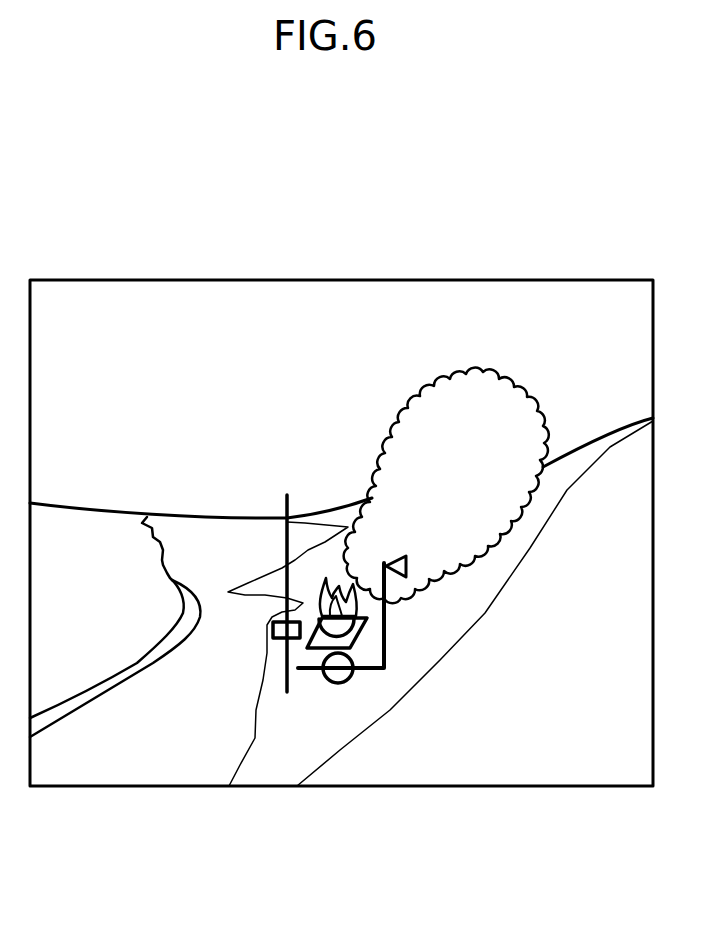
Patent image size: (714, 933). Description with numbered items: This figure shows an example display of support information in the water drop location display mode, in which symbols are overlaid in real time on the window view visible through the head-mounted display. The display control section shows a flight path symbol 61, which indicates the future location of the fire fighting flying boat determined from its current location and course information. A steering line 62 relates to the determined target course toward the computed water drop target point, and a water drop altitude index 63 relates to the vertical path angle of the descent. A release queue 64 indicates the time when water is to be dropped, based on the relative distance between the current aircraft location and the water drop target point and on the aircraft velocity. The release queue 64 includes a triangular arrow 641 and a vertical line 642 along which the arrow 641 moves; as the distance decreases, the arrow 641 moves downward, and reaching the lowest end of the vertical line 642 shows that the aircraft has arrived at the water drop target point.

The flight path symbol 61 is at (469, 668).
The steering line 62 is at (287, 535).
The water drop altitude index 63 is at (275, 632).
The release queue 64 is at (474, 634).
The triangular arrow 641 is at (390, 566).
The vertical line 642 is at (386, 637).